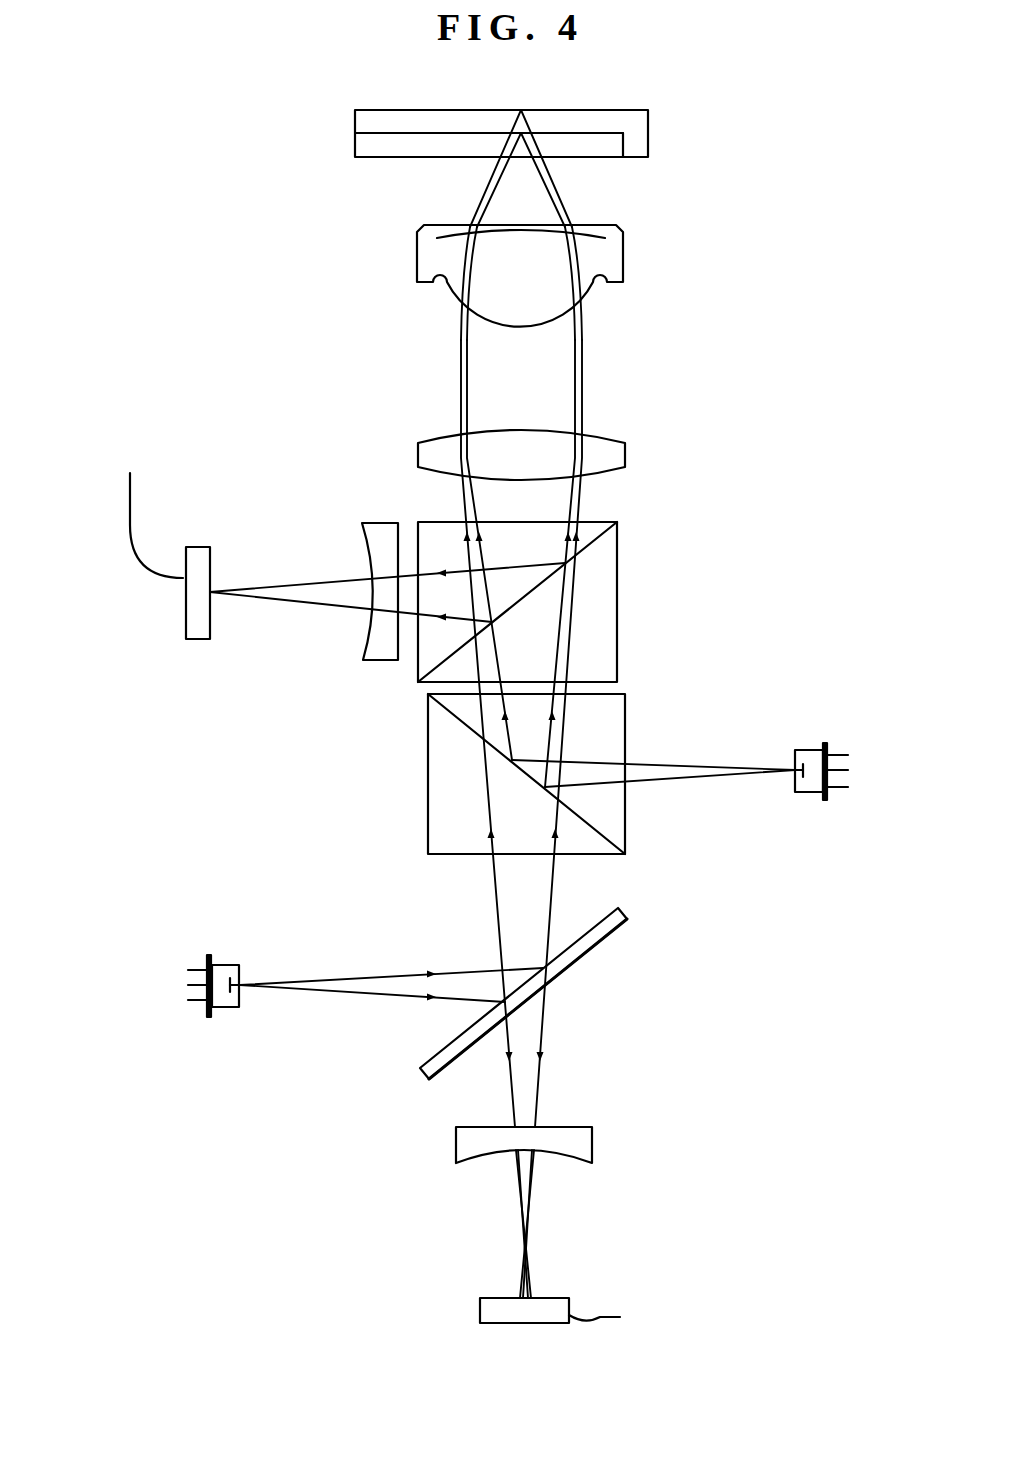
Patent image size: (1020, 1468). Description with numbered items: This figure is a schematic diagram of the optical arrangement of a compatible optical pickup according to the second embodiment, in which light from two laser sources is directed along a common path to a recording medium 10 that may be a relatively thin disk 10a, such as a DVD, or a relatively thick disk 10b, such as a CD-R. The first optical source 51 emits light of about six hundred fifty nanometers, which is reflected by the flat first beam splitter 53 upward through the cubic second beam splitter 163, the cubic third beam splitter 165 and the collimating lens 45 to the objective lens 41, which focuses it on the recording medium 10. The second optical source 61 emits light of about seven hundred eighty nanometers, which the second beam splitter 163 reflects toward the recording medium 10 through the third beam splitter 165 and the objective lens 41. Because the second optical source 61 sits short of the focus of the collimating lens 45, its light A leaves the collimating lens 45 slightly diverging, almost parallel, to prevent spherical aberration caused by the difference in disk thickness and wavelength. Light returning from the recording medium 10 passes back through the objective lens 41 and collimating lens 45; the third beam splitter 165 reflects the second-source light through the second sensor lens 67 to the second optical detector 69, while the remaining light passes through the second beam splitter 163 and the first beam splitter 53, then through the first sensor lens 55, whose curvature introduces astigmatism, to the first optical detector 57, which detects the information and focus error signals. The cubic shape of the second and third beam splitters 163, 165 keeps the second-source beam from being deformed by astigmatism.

The recording medium 10 is at (505, 130).
The relatively thin disk 10a is at (358, 150).
The relatively thick disk 10b is at (372, 118).
The objective lens 41 is at (625, 253).
The collimating lens 45 is at (626, 452).
The light A is at (466, 400).
The second sensor lens 67 is at (382, 522).
The second optical detector 69 is at (203, 547).
The third beam splitter 165 is at (617, 538).
The second beam splitter 163 is at (428, 720).
The second optical source 61 is at (810, 794).
The first optical source 51 is at (228, 1008).
The first beam splitter 53 is at (627, 925).
The first sensor lens 55 is at (577, 1130).
The first optical detector 57 is at (485, 1298).